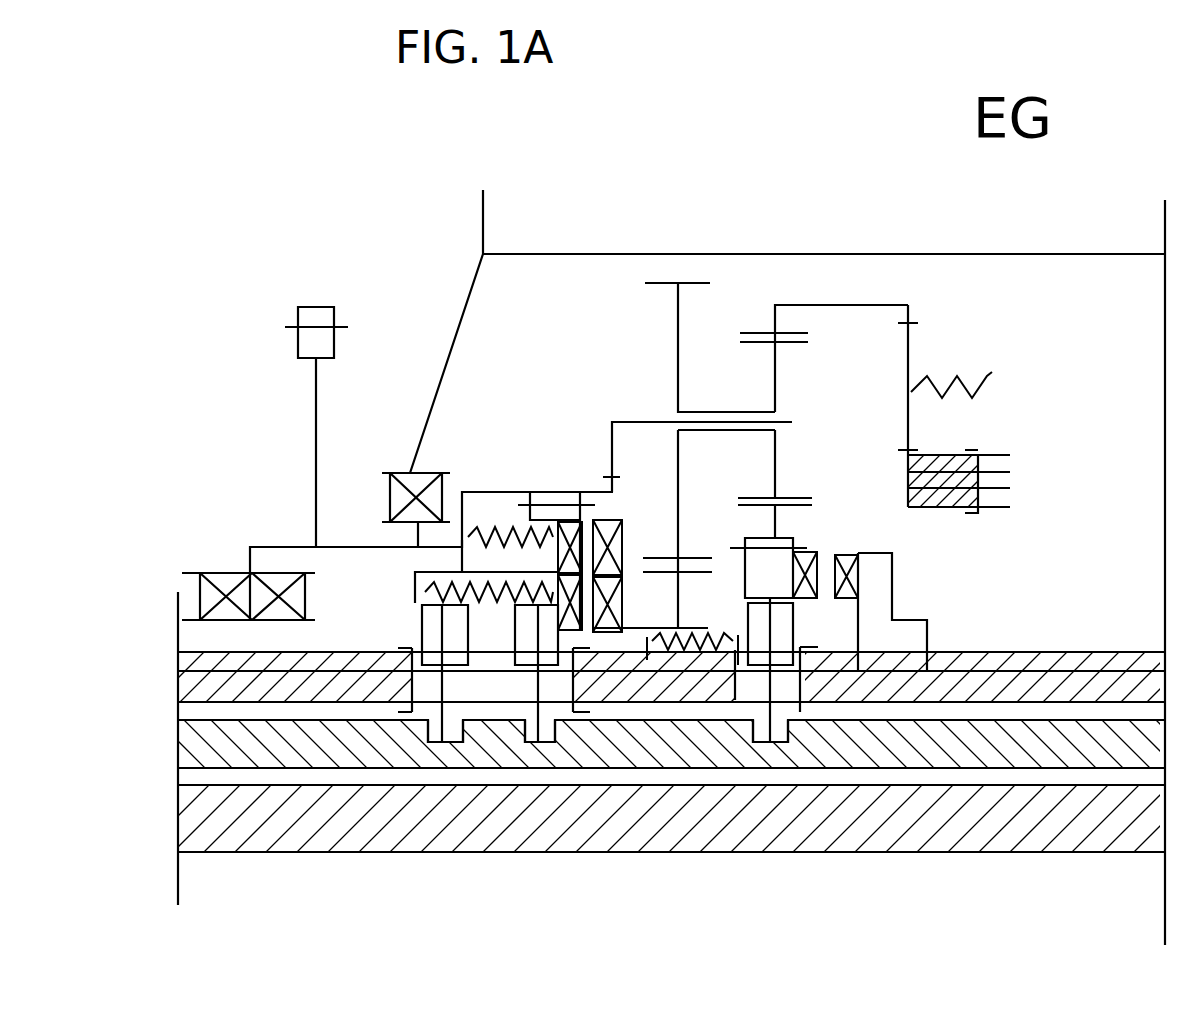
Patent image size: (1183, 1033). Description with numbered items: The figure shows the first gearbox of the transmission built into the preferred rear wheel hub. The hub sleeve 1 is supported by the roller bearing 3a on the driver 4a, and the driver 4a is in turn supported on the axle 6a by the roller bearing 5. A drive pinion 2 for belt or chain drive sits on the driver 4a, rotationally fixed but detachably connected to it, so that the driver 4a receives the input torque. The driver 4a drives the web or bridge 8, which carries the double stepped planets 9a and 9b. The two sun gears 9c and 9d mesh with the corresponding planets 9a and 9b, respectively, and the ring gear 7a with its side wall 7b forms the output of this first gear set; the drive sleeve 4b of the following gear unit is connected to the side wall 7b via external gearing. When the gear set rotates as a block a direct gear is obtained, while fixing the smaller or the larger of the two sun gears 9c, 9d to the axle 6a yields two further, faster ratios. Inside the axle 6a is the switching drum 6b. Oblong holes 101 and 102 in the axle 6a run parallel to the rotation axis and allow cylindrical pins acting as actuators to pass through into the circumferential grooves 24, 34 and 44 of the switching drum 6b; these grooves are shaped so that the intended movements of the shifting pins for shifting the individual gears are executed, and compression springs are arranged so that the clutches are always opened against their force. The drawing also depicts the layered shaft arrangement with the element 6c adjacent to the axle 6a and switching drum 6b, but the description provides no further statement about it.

The hub sleeve 1 is at (463, 308).
The pinion 2 is at (308, 300).
The roller bearing 3a is at (388, 485).
The driver 4a is at (297, 547).
The drive sleeve 4b is at (945, 455).
The roller bearing 5 is at (217, 573).
The axle 6a is at (178, 673).
The switching drum 6b is at (178, 740).
The third shaft 6c is at (178, 832).
The ring gear 7a is at (775, 318).
The side wall 7b is at (908, 333).
The bridge 8 is at (625, 422).
The planet 9a is at (660, 283).
The planet 9b is at (793, 347).
The sun gear 9c is at (697, 572).
The sun gear 9d is at (775, 520).
The circumferential groove 24 is at (428, 740).
The circumferential groove 34 is at (555, 742).
The circumferential groove 44 is at (785, 745).
The oblong hole 101 is at (563, 685).
The oblong hole 102 is at (790, 685).